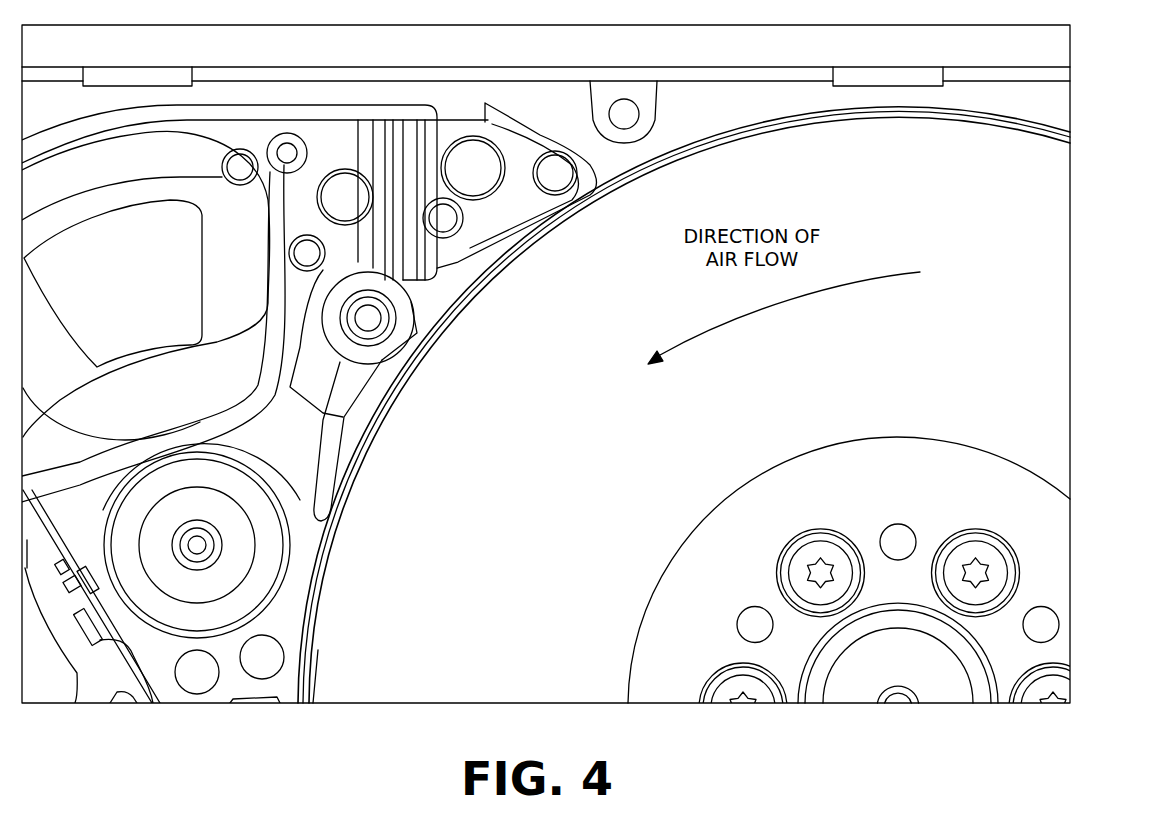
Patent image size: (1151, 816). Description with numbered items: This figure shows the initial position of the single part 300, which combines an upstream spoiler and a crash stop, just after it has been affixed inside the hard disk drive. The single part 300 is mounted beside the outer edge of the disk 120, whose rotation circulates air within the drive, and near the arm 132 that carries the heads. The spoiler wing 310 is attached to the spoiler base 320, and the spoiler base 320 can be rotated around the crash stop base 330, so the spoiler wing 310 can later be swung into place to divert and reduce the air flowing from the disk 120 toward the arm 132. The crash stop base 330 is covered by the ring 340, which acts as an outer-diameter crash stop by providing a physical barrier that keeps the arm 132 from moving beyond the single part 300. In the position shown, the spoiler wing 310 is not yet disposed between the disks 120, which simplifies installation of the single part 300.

The disk 120 is at (1053, 237).
The arm 132 is at (317, 653).
The single part 300 is at (436, 405).
The spoiler wing 310 is at (332, 480).
The spoiler base 320 is at (413, 337).
The crash stop base 330 is at (400, 312).
The ring 340 is at (457, 305).